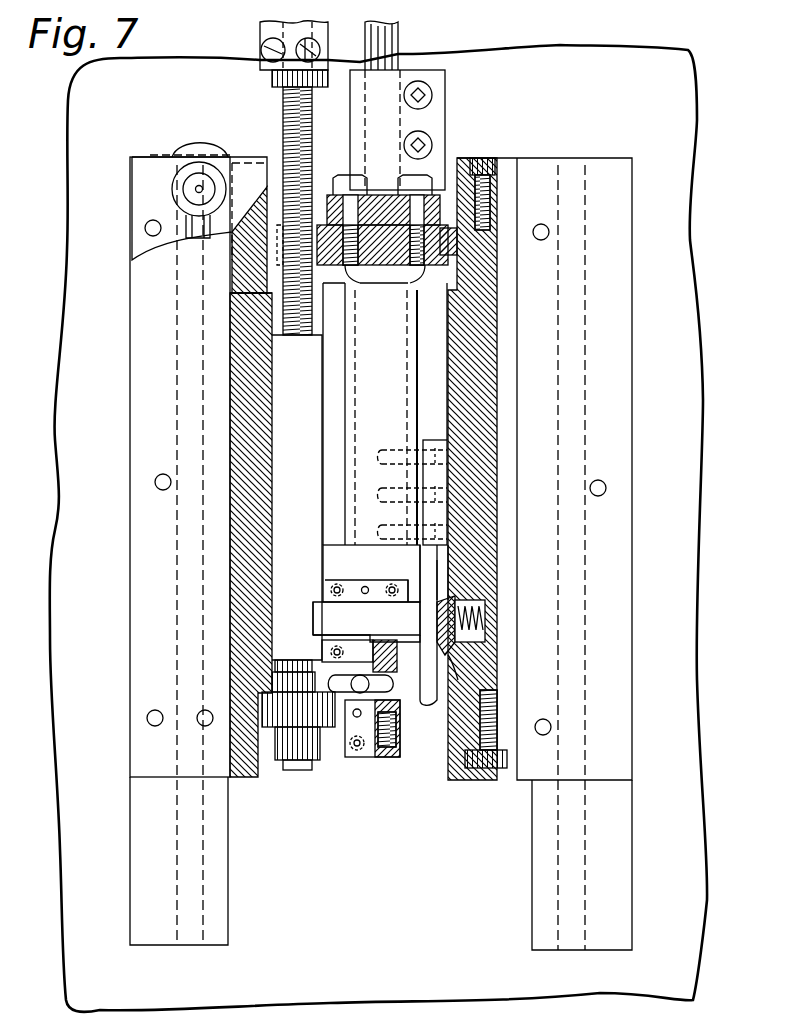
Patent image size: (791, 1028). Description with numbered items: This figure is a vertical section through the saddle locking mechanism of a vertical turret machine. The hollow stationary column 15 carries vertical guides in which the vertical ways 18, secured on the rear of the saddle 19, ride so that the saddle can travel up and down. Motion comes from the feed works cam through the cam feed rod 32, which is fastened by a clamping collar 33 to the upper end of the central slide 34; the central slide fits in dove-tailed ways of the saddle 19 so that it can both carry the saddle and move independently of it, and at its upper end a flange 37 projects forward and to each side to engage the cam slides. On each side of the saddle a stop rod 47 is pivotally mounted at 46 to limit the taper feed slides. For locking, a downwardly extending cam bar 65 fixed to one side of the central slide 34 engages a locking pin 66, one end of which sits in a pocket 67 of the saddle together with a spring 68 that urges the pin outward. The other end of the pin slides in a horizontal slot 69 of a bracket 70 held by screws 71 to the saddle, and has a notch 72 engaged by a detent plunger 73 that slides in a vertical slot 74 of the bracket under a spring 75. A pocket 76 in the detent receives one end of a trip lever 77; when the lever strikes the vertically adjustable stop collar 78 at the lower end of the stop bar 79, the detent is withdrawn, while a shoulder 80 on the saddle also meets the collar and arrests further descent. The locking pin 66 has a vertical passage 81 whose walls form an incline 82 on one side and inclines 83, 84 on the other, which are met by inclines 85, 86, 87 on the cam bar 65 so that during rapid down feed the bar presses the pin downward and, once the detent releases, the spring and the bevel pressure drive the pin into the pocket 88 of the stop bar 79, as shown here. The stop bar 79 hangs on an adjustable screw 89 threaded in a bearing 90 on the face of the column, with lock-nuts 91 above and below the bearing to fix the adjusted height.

The hollow stationary column 15 is at (64, 536).
The vertical ways 18 is at (218, 848).
The saddle 19 is at (235, 398).
The cam feed rod 32 is at (398, 38).
The clamping collar 33 is at (430, 115).
The central slide 34 is at (385, 414).
The flange 37 is at (362, 236).
The pivot 46 is at (186, 188).
The stop rod 47 is at (190, 225).
The cam bar 65 is at (452, 556).
The locking pin 66 is at (366, 590).
The pocket 67 is at (478, 637).
The spring 68 is at (485, 612).
The horizontal slot 69 is at (348, 600).
The bracket 70 is at (366, 586).
The screws 71 is at (393, 584).
The notch 72 is at (372, 630).
The detent plunger 73 is at (359, 656).
The vertical slot 74 is at (358, 750).
The spring 75 is at (388, 742).
The pocket 76 is at (418, 740).
The trip lever 77 is at (355, 694).
The stop collar 78 is at (298, 731).
The stop bar 79 is at (297, 497).
The shoulder 80 is at (250, 670).
The vertical passage 81 is at (450, 550).
The incline 82 is at (425, 600).
The incline 83 is at (456, 616).
The incline 84 is at (470, 668).
The incline 85 is at (432, 702).
The incline 86 is at (440, 592).
The incline 87 is at (465, 735).
The pocket 88 is at (318, 600).
The adjustable screw 89 is at (283, 123).
The bearing 90 is at (262, 36).
The lock-nuts 91 is at (272, 79).